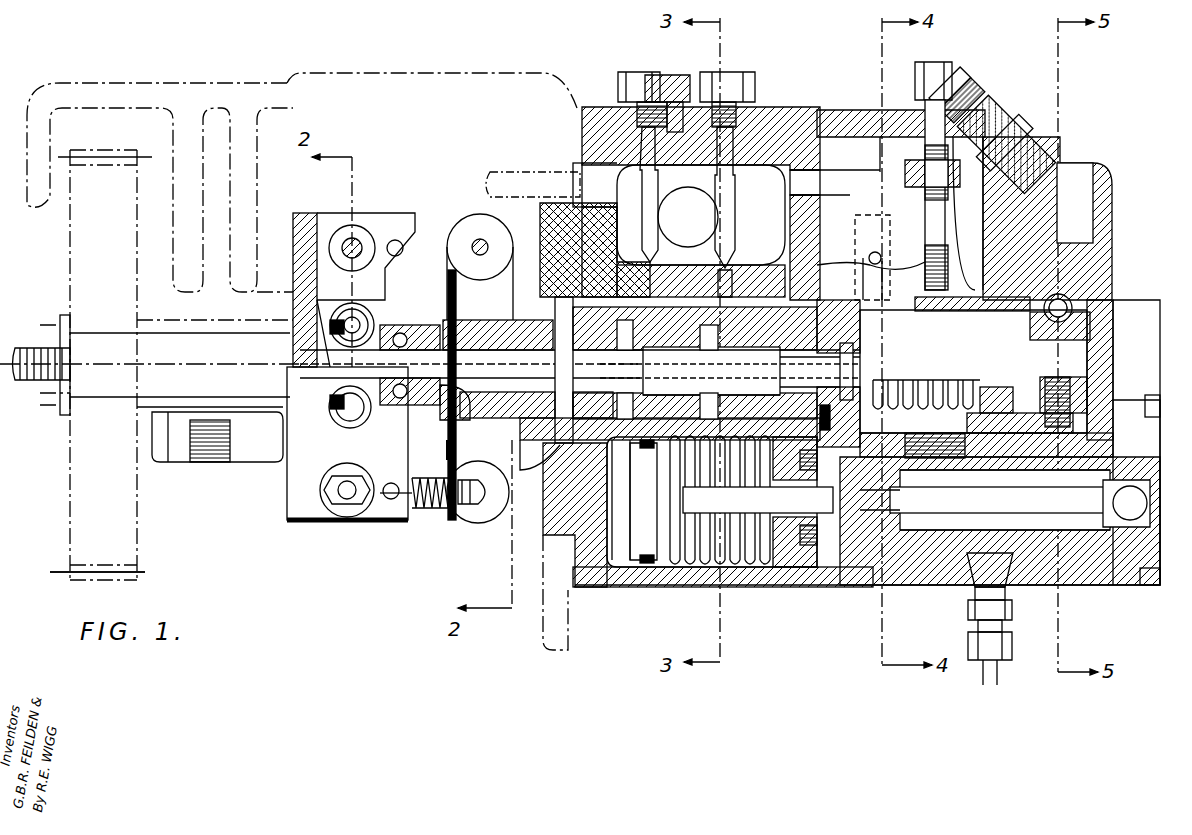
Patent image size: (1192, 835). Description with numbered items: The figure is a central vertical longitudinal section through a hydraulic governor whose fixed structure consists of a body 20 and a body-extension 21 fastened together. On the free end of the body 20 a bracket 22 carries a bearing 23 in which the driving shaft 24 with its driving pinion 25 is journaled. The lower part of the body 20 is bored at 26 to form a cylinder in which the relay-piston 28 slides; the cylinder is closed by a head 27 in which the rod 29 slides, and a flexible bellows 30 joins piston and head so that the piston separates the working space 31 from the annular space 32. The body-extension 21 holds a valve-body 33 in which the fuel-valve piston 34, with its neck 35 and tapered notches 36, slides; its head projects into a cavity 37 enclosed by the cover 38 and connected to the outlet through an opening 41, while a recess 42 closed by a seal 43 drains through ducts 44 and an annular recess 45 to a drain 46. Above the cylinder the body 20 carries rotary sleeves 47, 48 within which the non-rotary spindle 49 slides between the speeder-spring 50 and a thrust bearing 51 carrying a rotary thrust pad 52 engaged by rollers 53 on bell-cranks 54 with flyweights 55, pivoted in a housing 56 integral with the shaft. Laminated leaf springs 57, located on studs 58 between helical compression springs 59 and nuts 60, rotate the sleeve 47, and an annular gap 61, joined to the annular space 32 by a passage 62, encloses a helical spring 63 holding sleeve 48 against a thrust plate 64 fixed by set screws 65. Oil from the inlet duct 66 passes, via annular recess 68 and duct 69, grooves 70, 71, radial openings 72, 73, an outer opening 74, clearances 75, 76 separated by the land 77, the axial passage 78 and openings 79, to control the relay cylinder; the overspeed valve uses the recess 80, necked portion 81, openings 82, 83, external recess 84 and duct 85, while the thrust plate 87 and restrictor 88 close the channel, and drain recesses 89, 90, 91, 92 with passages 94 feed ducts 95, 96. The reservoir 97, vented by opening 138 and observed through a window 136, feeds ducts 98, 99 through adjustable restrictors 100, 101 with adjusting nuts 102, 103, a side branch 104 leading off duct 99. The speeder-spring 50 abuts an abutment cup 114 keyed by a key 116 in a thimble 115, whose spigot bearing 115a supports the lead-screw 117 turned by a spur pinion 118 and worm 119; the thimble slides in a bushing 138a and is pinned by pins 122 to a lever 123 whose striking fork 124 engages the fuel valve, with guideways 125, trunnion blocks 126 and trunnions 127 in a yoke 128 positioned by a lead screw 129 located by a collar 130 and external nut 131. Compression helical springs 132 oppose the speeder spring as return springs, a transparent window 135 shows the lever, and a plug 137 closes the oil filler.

The body 20 is at (782, 104).
The body-extension 21 is at (1100, 252).
The bracket 22 is at (405, 75).
The bearing 23 is at (170, 440).
The driving shaft 24 is at (240, 430).
The driving pinion 25 is at (135, 572).
The cylinder 26 is at (680, 570).
The head 27 is at (820, 570).
The relay-piston 28 is at (645, 448).
The rod 29 is at (755, 570).
The flexible bellows 30 is at (705, 570).
The working space 31 is at (622, 570).
The annular space 32 is at (730, 570).
The valve-body 33 is at (1075, 575).
The fuel-valve piston 34 is at (1080, 500).
The neck 35 is at (1040, 575).
The tapered notches 36 is at (1110, 575).
The cavity 37 is at (1130, 500).
The cover 38 is at (1150, 430).
The opening 41 is at (1150, 520).
The recess 42 is at (920, 560).
The seal 43 is at (862, 575).
The ducts 44 is at (950, 560).
The annular recess 45 is at (1008, 600).
The drain 46 is at (975, 598).
The rotary sleeve 47 is at (555, 318).
The rotary sleeve 48 is at (790, 487).
The non-rotary spindle 49 is at (818, 312).
The speeder-spring 50 is at (1010, 408).
The thrust bearing 51 is at (412, 400).
The rotary thrust pad 52 is at (368, 374).
The rollers 53 is at (352, 342).
The bell-cranks 54 is at (300, 258).
The flyweights 55 is at (480, 235).
The housing 56 is at (298, 522).
The laminated leaf springs 57 is at (450, 302).
The studs 58 is at (432, 508).
The helical compression springs 59 is at (402, 500).
The nuts 60 is at (470, 506).
The annular gap 61 is at (700, 335).
The passage 62 is at (715, 487).
The helical spring 63 is at (668, 500).
The thrust plate 64 is at (815, 466).
The set screws 65 is at (870, 400).
The inlet duct 66 is at (553, 470).
The annular recess 68 is at (605, 262).
The duct 69 is at (556, 490).
The external annular groove 70 is at (590, 238).
The external annular groove 71 is at (560, 404).
The radial openings 72 is at (568, 458).
The radial openings 73 is at (490, 412).
The radial opening 74 is at (458, 386).
The annular clearance 75 is at (528, 440).
The annular clearance 76 is at (508, 332).
The land 77 is at (528, 338).
The axial internal passage 78 is at (443, 328).
The radial openings 79 is at (695, 380).
The internal annular recess 80 is at (890, 330).
The necked portion 81 is at (905, 350).
The radial openings 82 is at (770, 382).
The radial openings 83 is at (798, 345).
The external annular recess 84 is at (806, 332).
The duct 85 is at (915, 356).
The speeder-spring thrust plate 87 is at (890, 342).
The restrictor 88 is at (396, 405).
The internal annular recess 89 is at (665, 330).
The external annular recess 90 is at (652, 232).
The internal annular recess 91 is at (737, 262).
The external annular recess 92 is at (745, 300).
The radial passages 94 is at (740, 282).
The duct 95 is at (700, 262).
The duct 96 is at (812, 318).
The reservoir 97 is at (620, 190).
The duct 98 is at (575, 215).
The duct 99 is at (735, 240).
The adjustable restrictor 100 is at (572, 190).
The adjustable restrictor 101 is at (734, 200).
The adjusting nut 102 is at (627, 72).
The adjusting nut 103 is at (716, 72).
The side branch 104 is at (700, 196).
The abutment cup 114 is at (1080, 380).
The thimble 115 is at (1080, 318).
The spigot bearing 115a is at (1112, 370).
The key 116 is at (1135, 428).
The lead-screw 117 is at (1000, 386).
The spur pinion 118 is at (1088, 395).
The worm 119 is at (1075, 303).
The pins 122 is at (925, 363).
The lever 123 is at (880, 313).
The striking fork 124 is at (835, 518).
The guideways 125 is at (880, 297).
The trunnion blocks 126 is at (892, 265).
The trunnions 127 is at (878, 252).
The yoke 128 is at (882, 175).
The lead screw 129 is at (942, 158).
The collar 130 is at (975, 190).
The external nut 131 is at (956, 62).
The compression helical springs 132 is at (940, 440).
The transparent window 135 is at (925, 380).
The window 136 is at (670, 75).
The plug 137 is at (1060, 95).
The opening 138 is at (802, 165).
The bushing 138a is at (960, 300).